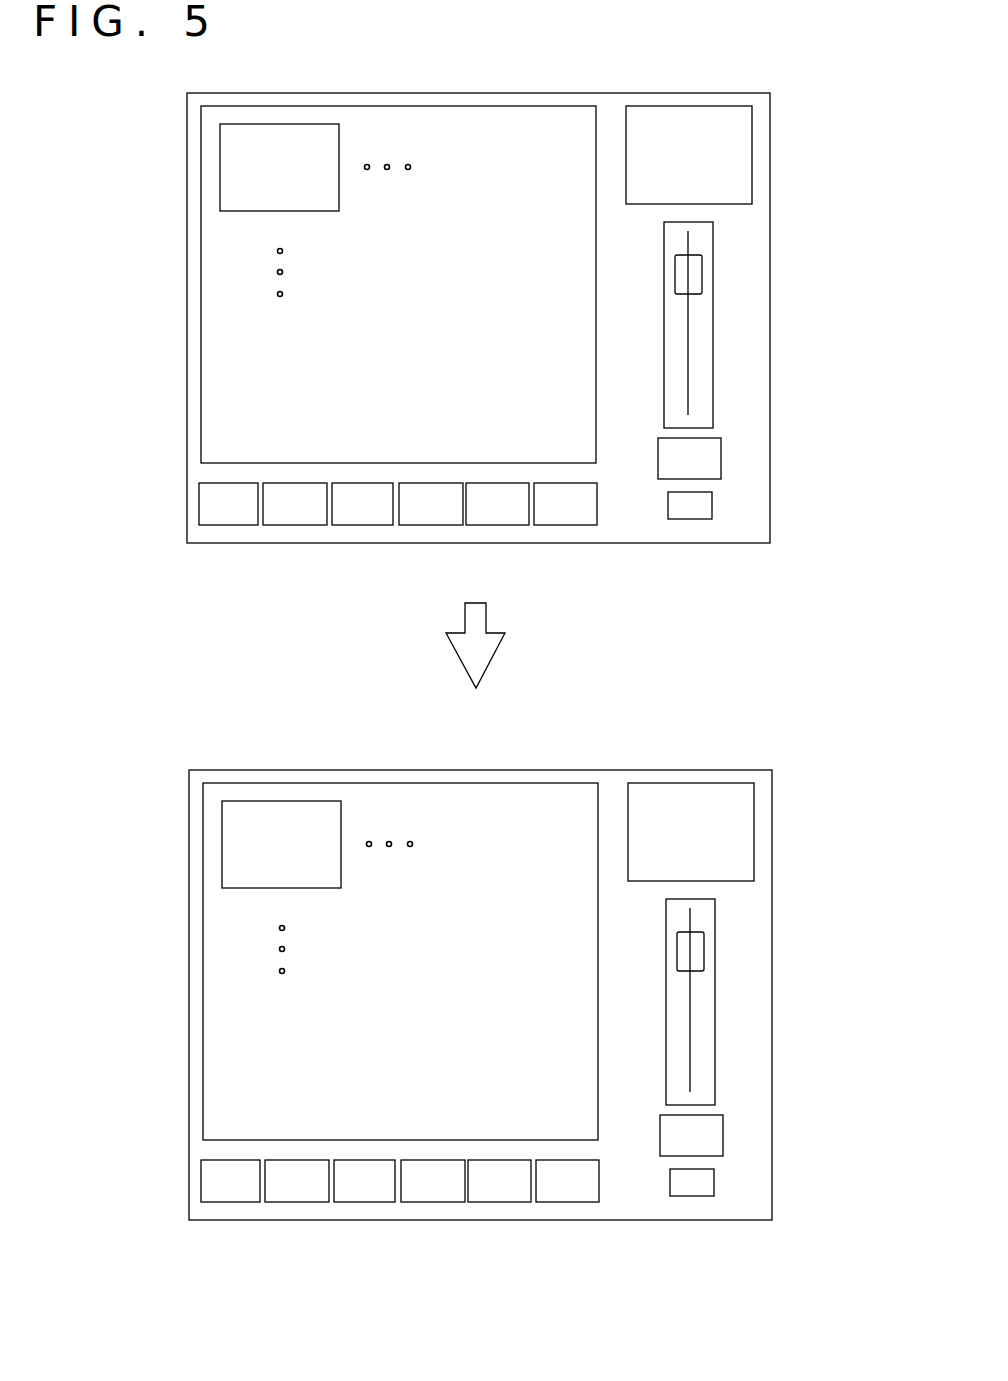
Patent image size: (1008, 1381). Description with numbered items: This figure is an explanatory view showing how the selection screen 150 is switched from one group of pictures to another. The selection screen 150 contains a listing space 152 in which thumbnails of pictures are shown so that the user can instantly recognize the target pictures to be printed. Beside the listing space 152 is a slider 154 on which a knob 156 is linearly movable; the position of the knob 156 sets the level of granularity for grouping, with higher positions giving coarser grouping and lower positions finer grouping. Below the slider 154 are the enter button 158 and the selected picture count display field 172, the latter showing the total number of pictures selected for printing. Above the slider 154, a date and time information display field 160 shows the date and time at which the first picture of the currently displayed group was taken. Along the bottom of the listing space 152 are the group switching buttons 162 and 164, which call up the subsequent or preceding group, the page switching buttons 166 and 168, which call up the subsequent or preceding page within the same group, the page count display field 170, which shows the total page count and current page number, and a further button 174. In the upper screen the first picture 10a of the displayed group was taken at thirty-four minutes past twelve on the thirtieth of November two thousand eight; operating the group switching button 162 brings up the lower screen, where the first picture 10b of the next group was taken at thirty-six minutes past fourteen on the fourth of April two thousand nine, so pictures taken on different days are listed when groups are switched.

The first picture 10a is at (262, 124).
The first picture 10b is at (264, 801).
The selection screen 150 is at (526, 93).
The listing space 152 is at (400, 106).
The slider 154 is at (713, 362).
The knob 156 is at (702, 270).
The enter button 158 is at (721, 452).
The date and time information display field 160 is at (688, 106).
The group switching button 162 is at (561, 526).
The group switching button 164 is at (294, 526).
The page switching button 166 is at (495, 526).
The page switching button 168 is at (362, 526).
The page count display field 170 is at (430, 526).
The selected picture count display field 172 is at (688, 520).
The button 174 is at (228, 526).